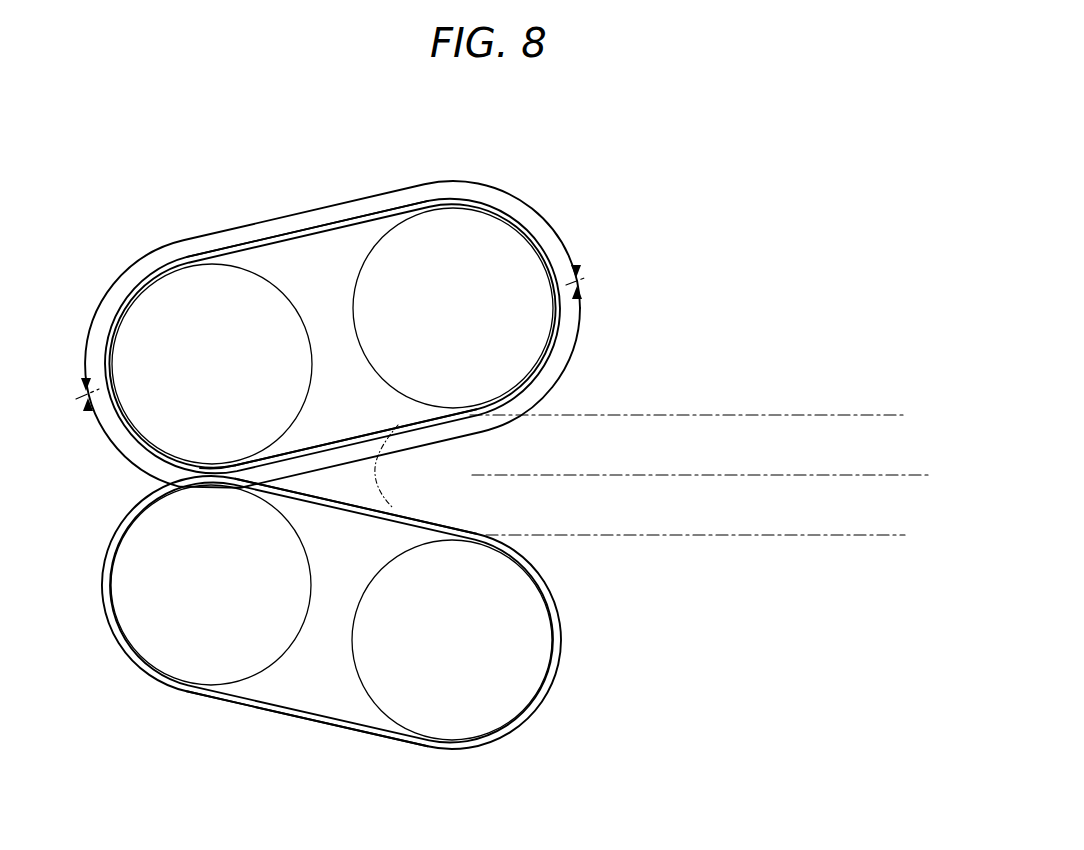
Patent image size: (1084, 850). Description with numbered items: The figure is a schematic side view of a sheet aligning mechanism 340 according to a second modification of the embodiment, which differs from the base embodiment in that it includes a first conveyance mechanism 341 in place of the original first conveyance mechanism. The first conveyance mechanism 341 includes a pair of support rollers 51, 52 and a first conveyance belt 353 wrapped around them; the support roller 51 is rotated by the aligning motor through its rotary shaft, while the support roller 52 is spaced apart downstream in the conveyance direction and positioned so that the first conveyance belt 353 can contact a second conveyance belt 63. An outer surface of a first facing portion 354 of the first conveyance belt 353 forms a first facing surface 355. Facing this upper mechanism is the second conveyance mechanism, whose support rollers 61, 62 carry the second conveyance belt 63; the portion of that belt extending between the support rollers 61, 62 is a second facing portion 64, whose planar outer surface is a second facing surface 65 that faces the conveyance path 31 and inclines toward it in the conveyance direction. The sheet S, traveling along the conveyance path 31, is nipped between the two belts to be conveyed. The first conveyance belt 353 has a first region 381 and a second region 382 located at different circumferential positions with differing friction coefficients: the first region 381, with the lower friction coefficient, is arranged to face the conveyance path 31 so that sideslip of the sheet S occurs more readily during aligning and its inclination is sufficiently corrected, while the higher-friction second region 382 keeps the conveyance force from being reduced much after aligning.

The sheet aligning mechanism 340 is at (347, 317).
The first conveyance mechanism 341 is at (332, 281).
The second region 382 is at (332, 318).
The first region 381 is at (406, 398).
The first conveyance belt 353 is at (307, 201).
The first facing portion 354 is at (356, 419).
The first facing surface 355 is at (292, 506).
The support roller 52 is at (174, 364).
The support roller 51 is at (505, 308).
The second facing portion 64 is at (331, 612).
The second facing surface 65 is at (355, 479).
The second conveyance belt 63 is at (307, 751).
The support roller 62 is at (174, 585).
The support roller 61 is at (492, 640).
The conveyance path 31 is at (704, 525).
The sheet S is at (695, 585).